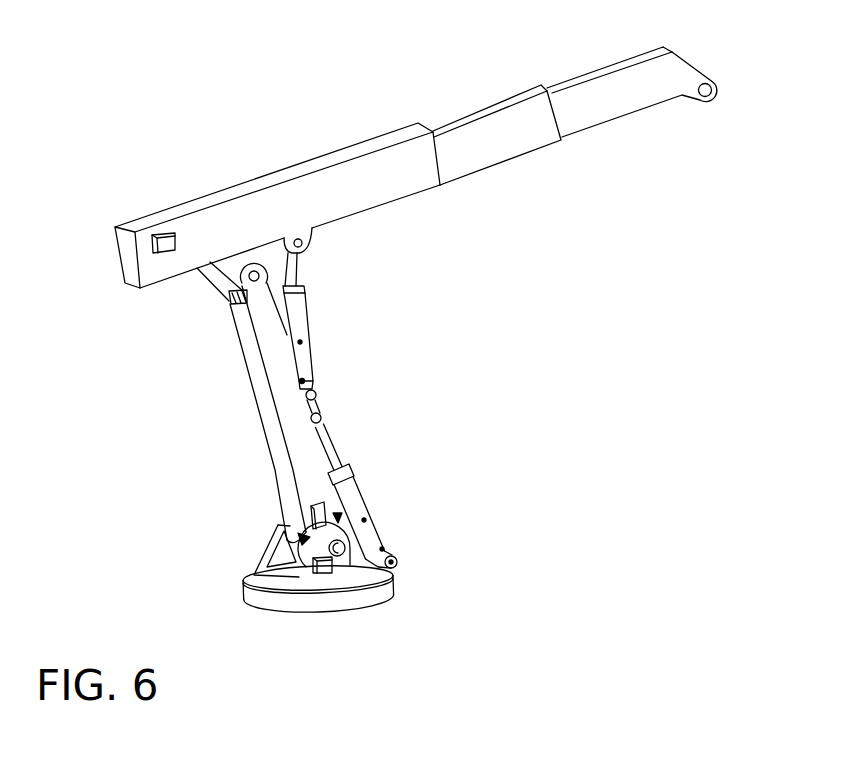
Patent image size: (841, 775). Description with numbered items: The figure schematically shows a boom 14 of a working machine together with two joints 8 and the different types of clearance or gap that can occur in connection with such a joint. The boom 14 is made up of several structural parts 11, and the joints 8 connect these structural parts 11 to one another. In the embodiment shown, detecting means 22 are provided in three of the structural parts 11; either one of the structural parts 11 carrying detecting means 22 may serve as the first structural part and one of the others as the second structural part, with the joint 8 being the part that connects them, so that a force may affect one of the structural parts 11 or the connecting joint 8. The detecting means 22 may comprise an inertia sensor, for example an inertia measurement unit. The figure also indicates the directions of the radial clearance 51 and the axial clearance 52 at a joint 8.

The boom 14 is at (313, 91).
The structural part 11 is at (242, 214).
The detecting means 22 is at (153, 238).
The joint 8 is at (276, 527).
The radial clearance 51 is at (338, 530).
The axial clearance 52 is at (318, 540).